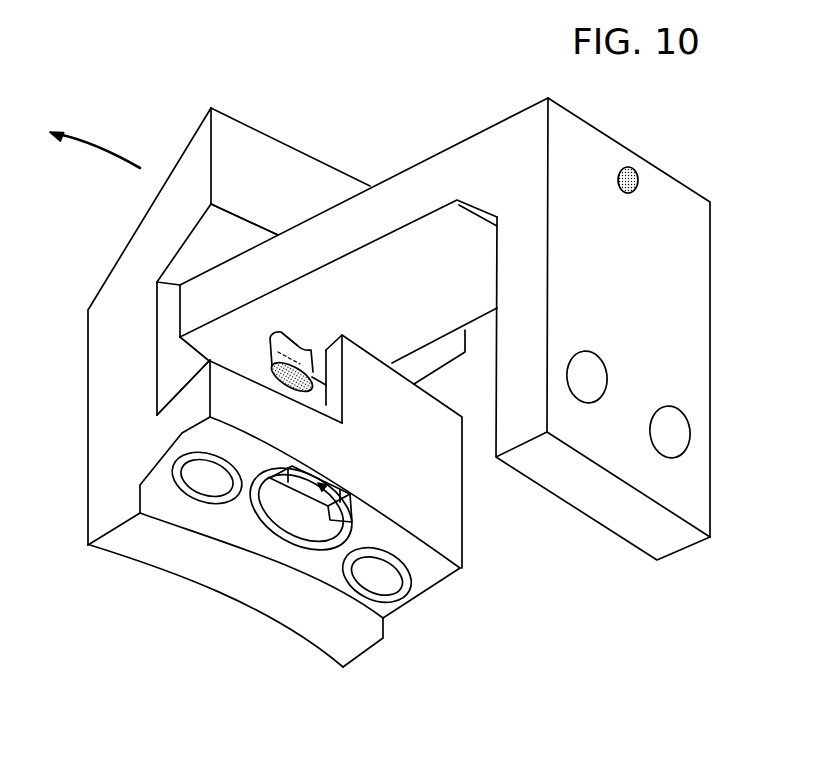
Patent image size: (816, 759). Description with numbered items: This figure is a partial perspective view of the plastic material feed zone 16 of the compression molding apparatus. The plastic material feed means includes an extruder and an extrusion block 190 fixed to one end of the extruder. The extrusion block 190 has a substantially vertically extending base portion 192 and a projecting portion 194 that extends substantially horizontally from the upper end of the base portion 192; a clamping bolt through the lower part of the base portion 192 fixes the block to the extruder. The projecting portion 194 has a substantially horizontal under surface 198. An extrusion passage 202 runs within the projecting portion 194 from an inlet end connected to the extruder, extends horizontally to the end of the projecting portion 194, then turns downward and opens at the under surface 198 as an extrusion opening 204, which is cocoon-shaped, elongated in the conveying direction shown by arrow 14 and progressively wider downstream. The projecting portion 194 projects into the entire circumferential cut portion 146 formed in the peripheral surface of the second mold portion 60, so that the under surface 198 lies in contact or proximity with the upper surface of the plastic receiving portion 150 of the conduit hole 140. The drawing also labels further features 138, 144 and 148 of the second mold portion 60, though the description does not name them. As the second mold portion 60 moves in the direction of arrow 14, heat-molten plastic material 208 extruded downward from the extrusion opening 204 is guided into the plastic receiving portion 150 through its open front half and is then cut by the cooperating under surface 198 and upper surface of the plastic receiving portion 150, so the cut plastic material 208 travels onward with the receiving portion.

The arrow 14 is at (118, 155).
The plastic material feed zone 16 is at (504, 637).
The second mold portion 60 is at (180, 590).
The aperture 138 is at (313, 550).
The conduit hole 140 is at (333, 496).
The upper surface 144 is at (206, 255).
The circumferential cut portion 146 is at (438, 358).
The inclined surface 148 is at (180, 383).
The plastic receiving portion 150 is at (328, 397).
The extrusion block 190 is at (487, 122).
The base portion 192 is at (710, 367).
The projecting portion 194 is at (392, 177).
The under surface 198 is at (205, 340).
The extrusion passage 202 is at (638, 177).
The extrusion opening 204 is at (300, 349).
The plastic material 208 is at (292, 388).